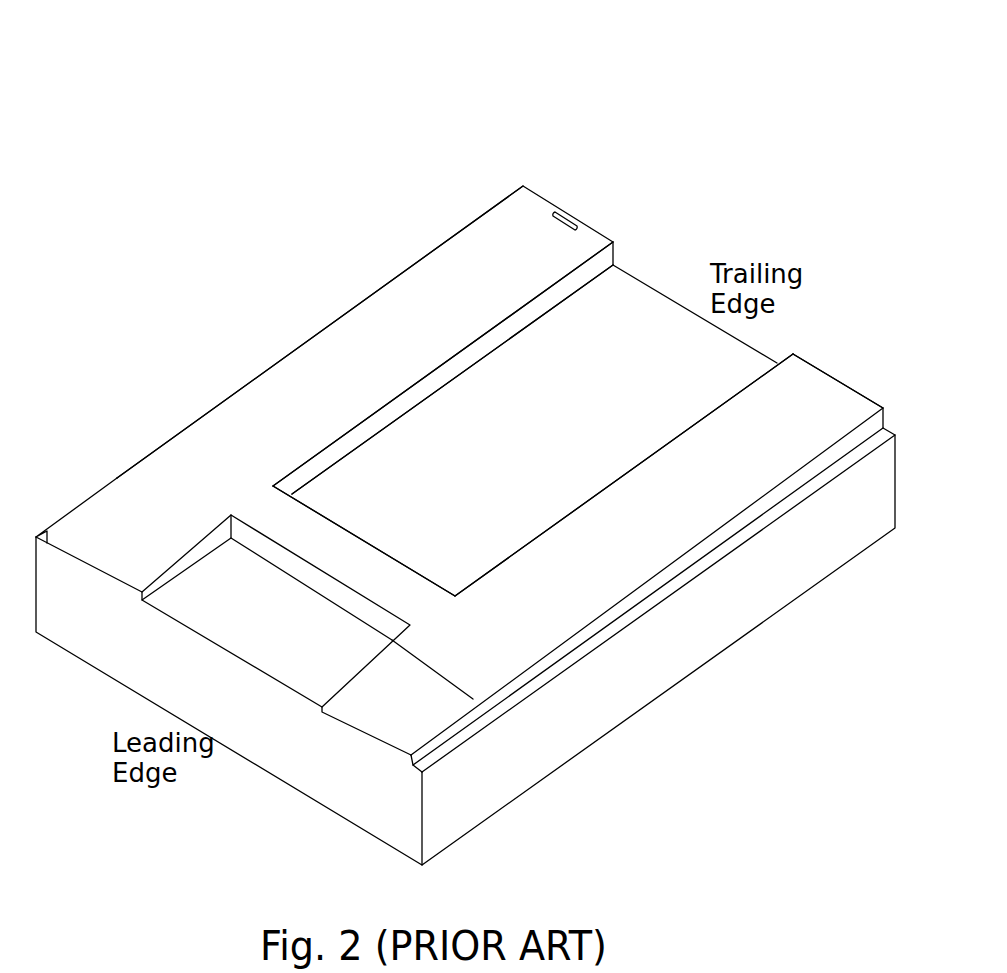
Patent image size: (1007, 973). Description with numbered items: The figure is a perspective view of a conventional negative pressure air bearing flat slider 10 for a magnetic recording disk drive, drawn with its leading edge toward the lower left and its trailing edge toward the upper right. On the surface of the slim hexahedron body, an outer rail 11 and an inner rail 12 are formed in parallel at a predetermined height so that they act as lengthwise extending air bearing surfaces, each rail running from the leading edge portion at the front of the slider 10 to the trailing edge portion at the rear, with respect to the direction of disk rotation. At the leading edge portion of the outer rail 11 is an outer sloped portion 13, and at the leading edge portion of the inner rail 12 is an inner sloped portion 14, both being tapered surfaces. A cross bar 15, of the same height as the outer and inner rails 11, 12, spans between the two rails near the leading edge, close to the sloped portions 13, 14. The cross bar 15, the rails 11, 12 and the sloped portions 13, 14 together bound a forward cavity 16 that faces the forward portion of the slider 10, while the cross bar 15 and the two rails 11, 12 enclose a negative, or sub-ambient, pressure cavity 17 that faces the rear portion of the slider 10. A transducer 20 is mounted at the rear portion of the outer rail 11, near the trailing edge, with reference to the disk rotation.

The slider 10 is at (780, 103).
The outer rail 11 is at (378, 360).
The inner rail 12 is at (640, 527).
The outer sloped portion 13 is at (130, 535).
The inner sloped portion 14 is at (388, 692).
The cross bar 15 is at (338, 553).
The forward cavity 16 is at (273, 605).
The negative pressure cavity 17 is at (432, 490).
The transducer 20 is at (573, 203).